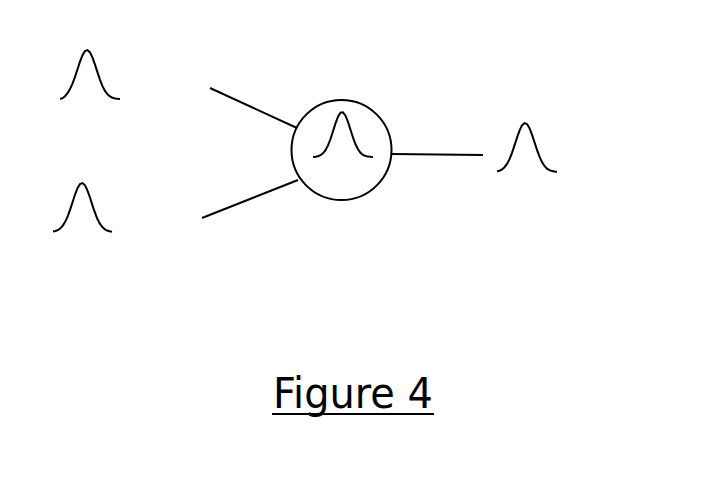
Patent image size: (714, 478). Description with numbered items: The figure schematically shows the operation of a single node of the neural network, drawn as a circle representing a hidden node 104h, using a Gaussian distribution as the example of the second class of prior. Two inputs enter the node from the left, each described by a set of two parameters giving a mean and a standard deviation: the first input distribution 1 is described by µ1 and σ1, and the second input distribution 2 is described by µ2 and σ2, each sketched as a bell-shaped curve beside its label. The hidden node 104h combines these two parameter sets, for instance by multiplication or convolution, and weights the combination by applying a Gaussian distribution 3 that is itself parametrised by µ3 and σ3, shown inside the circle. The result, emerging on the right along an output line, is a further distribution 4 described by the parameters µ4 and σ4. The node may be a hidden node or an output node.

The hidden node 104h is at (343, 199).
The first input Gaussian distribution (μ1, σ1) 1 is at (127, 74).
The second input Gaussian distribution (μ2, σ2) 2 is at (118, 207).
The node Gaussian distribution (μ3, σ3) 3 is at (343, 149).
The output Gaussian distribution (μ4, σ4) 4 is at (562, 147).